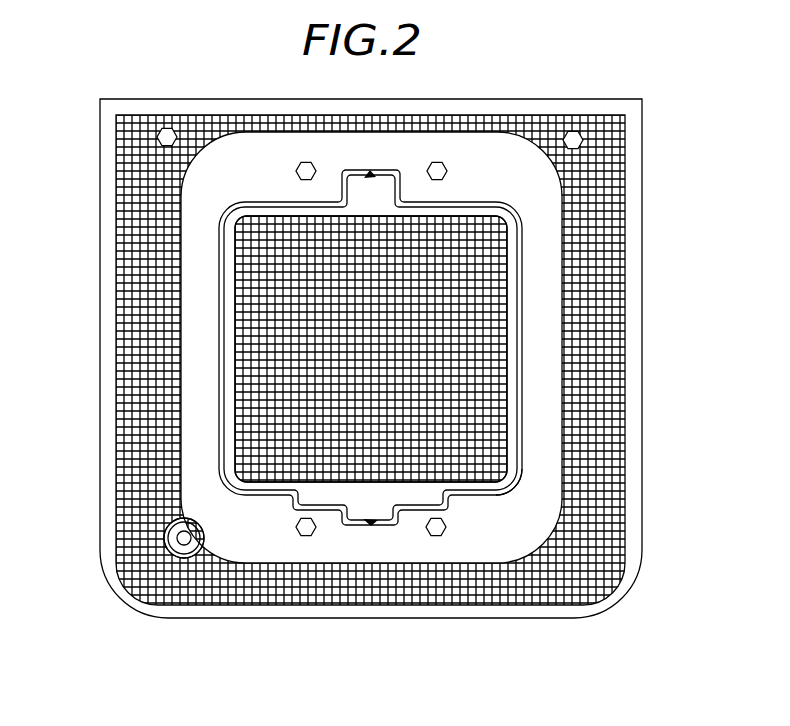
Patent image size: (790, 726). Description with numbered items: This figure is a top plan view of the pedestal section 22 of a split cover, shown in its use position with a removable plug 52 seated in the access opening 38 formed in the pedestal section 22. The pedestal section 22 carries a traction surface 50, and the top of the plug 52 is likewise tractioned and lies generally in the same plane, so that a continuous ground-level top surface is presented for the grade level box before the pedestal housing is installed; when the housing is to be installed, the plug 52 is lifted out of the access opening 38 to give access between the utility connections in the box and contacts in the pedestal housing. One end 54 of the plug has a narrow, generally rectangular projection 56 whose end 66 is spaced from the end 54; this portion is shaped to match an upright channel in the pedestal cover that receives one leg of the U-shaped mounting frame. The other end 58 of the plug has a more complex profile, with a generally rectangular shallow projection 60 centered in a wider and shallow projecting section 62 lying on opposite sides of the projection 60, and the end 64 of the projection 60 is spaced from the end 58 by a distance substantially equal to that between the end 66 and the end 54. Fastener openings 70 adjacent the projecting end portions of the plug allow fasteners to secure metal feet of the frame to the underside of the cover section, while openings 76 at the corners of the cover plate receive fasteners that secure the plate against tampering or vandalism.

The pedestal section of the split cover 22 is at (540, 287).
The access opening 38 is at (223, 378).
The traction surface 50 is at (600, 393).
The removable plug 52 is at (480, 367).
The one end of the plug 54 is at (472, 202).
The narrow generally rectangularly shaped projection 56 is at (358, 182).
The other end of the plug 58 is at (483, 497).
The generally rectangularly shaped shallow projection 60 is at (387, 513).
The wider and shallow projecting section 62 is at (418, 508).
The end of the projection 64 is at (358, 525).
The end of the projection 66 is at (371, 170).
The fastener openings 70 is at (440, 168).
The openings 76 is at (176, 547).